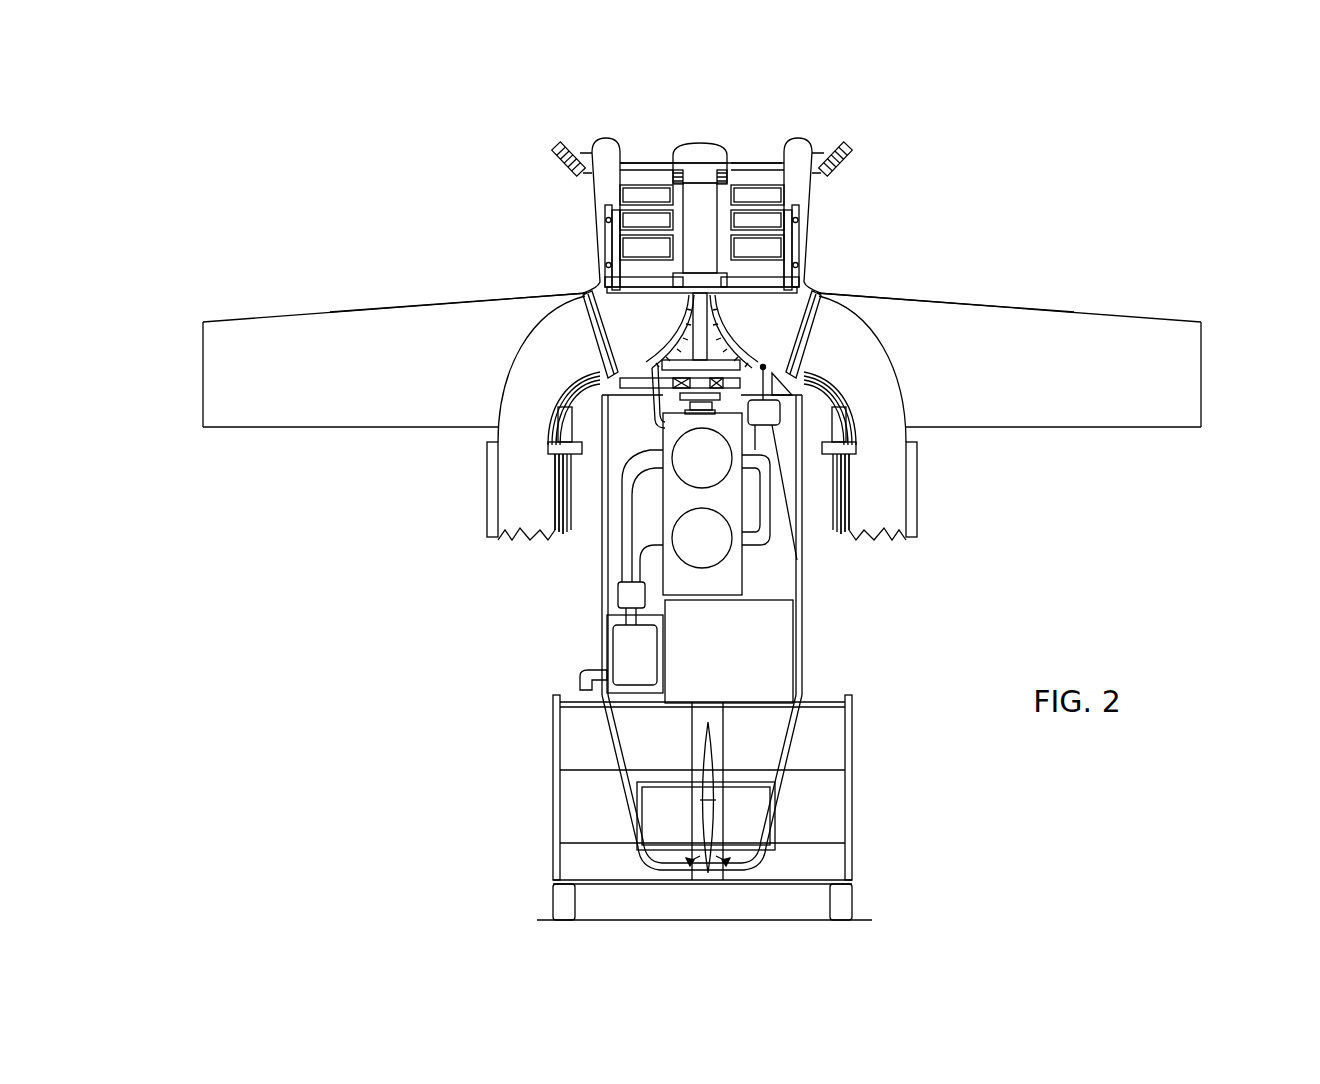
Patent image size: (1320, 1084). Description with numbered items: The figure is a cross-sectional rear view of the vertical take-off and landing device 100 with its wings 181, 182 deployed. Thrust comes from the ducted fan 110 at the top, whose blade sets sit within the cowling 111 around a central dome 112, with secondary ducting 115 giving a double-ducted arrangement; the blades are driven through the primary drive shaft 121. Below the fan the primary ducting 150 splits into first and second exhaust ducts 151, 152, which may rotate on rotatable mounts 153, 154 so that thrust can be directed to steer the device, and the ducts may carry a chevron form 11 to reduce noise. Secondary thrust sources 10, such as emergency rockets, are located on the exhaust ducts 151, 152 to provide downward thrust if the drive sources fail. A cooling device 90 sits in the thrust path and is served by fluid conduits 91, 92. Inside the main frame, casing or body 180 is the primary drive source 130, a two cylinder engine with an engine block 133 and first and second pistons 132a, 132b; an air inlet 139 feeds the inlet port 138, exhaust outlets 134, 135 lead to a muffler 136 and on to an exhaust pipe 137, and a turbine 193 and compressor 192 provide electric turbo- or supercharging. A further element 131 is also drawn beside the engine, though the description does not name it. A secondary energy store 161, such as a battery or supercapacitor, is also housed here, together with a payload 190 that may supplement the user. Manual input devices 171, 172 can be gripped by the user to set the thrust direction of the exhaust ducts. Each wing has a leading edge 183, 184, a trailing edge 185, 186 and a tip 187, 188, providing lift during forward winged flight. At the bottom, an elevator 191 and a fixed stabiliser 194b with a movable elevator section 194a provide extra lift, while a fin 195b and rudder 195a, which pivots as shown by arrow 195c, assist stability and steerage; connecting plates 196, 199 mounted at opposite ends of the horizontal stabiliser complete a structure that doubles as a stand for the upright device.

The secondary thrust source 10 is at (487, 490).
The chevron form 11 is at (510, 540).
The cooling device 90 is at (630, 342).
The fluid conduit 91 is at (645, 420).
The fluid conduit 92 is at (598, 385).
The vertical take-off and landing device 100 is at (682, 167).
The fan 110 is at (682, 190).
The cowling 111 is at (790, 150).
The central dome 112 is at (686, 150).
The secondary ducting 115 is at (556, 144).
The primary drive shaft 121 is at (738, 322).
The primary drive source 130 is at (565, 487).
The cable bundle 131 is at (815, 363).
The first piston 132a is at (677, 470).
The second piston 132b is at (677, 550).
The engine block 133 is at (730, 509).
The exhaust outlet 134 is at (638, 472).
The exhaust outlet 135 is at (650, 552).
The muffler 136 is at (620, 640).
The exhaust pipe 137 is at (585, 680).
The inlet port 138 is at (752, 540).
The air inlet 139 is at (840, 440).
The primary ducting 150 is at (607, 262).
The first exhaust duct 151 is at (508, 377).
The second exhaust duct 152 is at (892, 372).
The rotatable mount 153 is at (588, 328).
The rotatable mount 154 is at (820, 312).
The secondary energy store 161 is at (703, 671).
The manual input device 171 is at (563, 423).
The manual input device 172 is at (842, 432).
The main frame, casing or body 180 is at (667, 498).
The wing 181 is at (355, 369).
The wing 182 is at (1046, 371).
The leading edge 183 is at (420, 305).
The leading edge 184 is at (1010, 305).
The trailing edge 185 is at (293, 428).
The trailing edge 186 is at (1005, 428).
The tip 187 is at (203, 378).
The tip 188 is at (1202, 422).
The payload 190 is at (679, 820).
The elevator 191 is at (578, 855).
The compressor 192 is at (778, 432).
The turbine 193 is at (618, 590).
The movable elevator section 194a is at (577, 805).
The fixed stabiliser 194b is at (563, 715).
The rudder 195a is at (712, 825).
The fin 195b is at (712, 748).
The arrow 195c is at (705, 872).
The connecting plate 196 is at (852, 865).
The connecting plate 199 is at (556, 880).